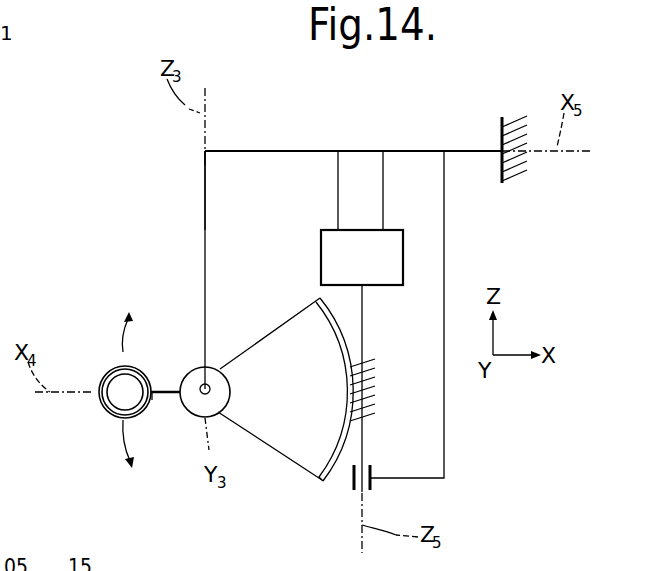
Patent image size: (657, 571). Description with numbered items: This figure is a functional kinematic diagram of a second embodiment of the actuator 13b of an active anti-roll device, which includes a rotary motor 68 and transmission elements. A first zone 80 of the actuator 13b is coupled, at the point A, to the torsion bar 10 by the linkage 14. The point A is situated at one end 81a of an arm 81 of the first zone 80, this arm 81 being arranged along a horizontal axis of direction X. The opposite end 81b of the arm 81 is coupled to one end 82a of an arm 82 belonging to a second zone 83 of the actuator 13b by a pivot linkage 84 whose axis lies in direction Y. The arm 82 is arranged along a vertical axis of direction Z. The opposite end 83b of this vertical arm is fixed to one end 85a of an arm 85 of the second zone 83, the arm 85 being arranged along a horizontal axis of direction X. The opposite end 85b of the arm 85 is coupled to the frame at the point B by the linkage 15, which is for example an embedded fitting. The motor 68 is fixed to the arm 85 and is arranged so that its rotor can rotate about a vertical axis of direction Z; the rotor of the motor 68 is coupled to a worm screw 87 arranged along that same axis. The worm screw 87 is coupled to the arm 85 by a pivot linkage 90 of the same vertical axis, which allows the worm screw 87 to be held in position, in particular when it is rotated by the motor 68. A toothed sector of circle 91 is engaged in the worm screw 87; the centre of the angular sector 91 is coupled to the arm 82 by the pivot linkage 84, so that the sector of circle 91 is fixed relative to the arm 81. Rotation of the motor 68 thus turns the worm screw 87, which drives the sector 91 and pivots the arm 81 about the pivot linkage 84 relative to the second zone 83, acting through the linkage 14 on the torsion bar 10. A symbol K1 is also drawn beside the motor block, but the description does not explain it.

The torsion bar 10 is at (122, 400).
The actuator 13b is at (402, 116).
The linkage 14 is at (107, 372).
The linkage 15 is at (502, 172).
The rotary motor 68 is at (338, 196).
The first zone 80 is at (173, 406).
The arm 81 is at (168, 390).
The end of arm 81a is at (152, 390).
The opposite end of arm 81b is at (178, 390).
The arm 82 is at (205, 250).
The end of arm 82a is at (209, 385).
The second zone 83 is at (198, 200).
The opposite end of arm 83b is at (205, 152).
The pivot linkage 84 is at (218, 413).
The arm 85 is at (300, 150).
The end of arm 85a is at (218, 150).
The opposite end of arm 85b is at (484, 149).
The worm screw 87 is at (372, 386).
The pivot linkage 90 is at (372, 478).
The toothed sector of circle 91 is at (347, 380).
The actuator K1 is at (320, 258).
The point A is at (152, 410).
The point B is at (493, 149).